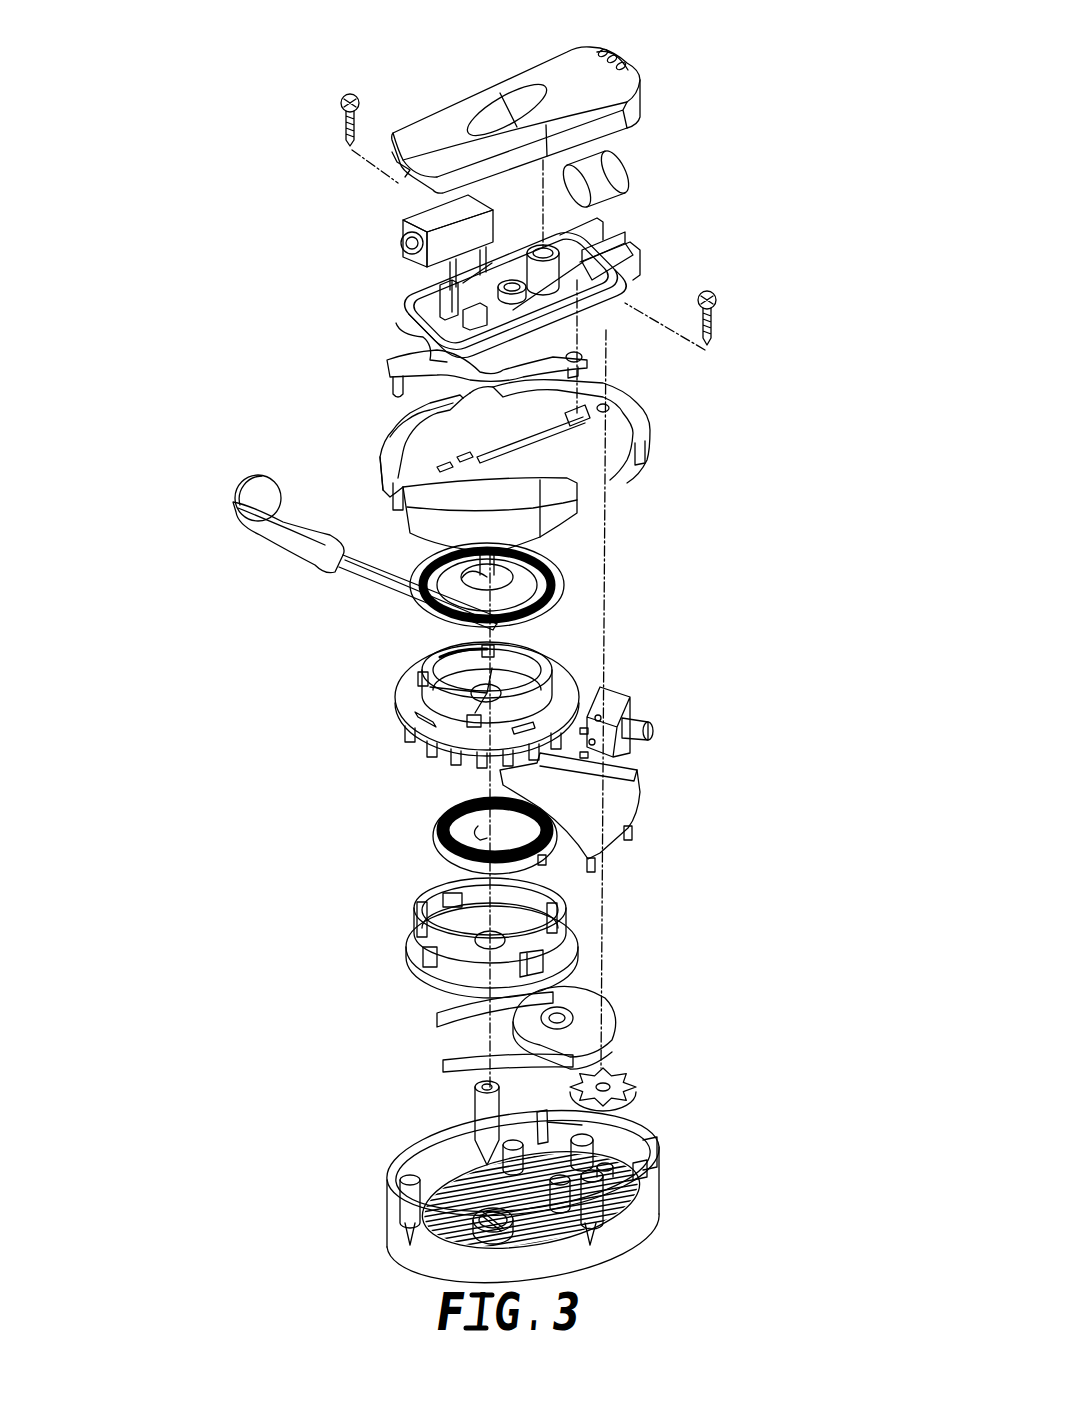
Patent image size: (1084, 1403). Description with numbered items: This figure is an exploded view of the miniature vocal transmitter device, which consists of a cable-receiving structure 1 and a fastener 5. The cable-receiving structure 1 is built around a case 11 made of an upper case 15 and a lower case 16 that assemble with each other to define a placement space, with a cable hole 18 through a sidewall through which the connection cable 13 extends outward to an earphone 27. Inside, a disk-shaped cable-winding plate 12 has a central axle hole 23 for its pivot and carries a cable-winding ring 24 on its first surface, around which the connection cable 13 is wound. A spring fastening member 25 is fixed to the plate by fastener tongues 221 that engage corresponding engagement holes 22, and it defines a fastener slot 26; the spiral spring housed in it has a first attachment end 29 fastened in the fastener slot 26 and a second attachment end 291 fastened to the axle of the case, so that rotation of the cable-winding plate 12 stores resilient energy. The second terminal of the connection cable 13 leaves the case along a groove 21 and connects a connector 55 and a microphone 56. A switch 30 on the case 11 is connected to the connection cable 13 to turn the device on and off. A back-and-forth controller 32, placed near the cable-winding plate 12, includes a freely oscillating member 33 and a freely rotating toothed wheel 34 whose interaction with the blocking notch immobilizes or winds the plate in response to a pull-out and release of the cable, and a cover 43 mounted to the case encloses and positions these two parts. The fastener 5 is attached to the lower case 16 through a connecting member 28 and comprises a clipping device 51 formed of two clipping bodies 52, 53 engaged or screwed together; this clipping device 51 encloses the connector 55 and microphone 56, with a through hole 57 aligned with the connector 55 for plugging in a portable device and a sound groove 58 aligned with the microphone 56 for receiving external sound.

The cable-receiving structure 1 is at (390, 1032).
The fastener 5 is at (316, 183).
The case 11 is at (410, 1180).
The cable-winding plate 12 is at (461, 710).
The connection cable 13 is at (360, 570).
The upper case 15 is at (630, 1203).
The lower case 16 is at (561, 418).
The cable hole 18 is at (578, 503).
The groove 21 is at (577, 413).
The engagement holes 22 is at (553, 975).
The central axle hole 23 is at (420, 686).
The cable-winding ring 24 is at (537, 673).
The spring fastening member 25 is at (520, 937).
The fastener slot 26 is at (567, 912).
The earphone 27 is at (280, 535).
The connecting member 28 is at (403, 362).
The first attachment end 29 is at (520, 838).
The switch 30 is at (620, 698).
The back-and-forth controller 32 is at (631, 1054).
The oscillating member 33 is at (600, 1034).
The toothed wheel 34 is at (633, 1093).
The cover 43 is at (603, 823).
The clipping device 51 is at (652, 244).
The clipping body 52 is at (645, 262).
The clipping body 53 is at (562, 108).
The connector 55 is at (400, 250).
The microphone 56 is at (612, 193).
The through hole 57 is at (402, 323).
The sound groove 58 is at (630, 64).
The fastener tongues 221 is at (417, 760).
The second attachment end 291 is at (450, 832).